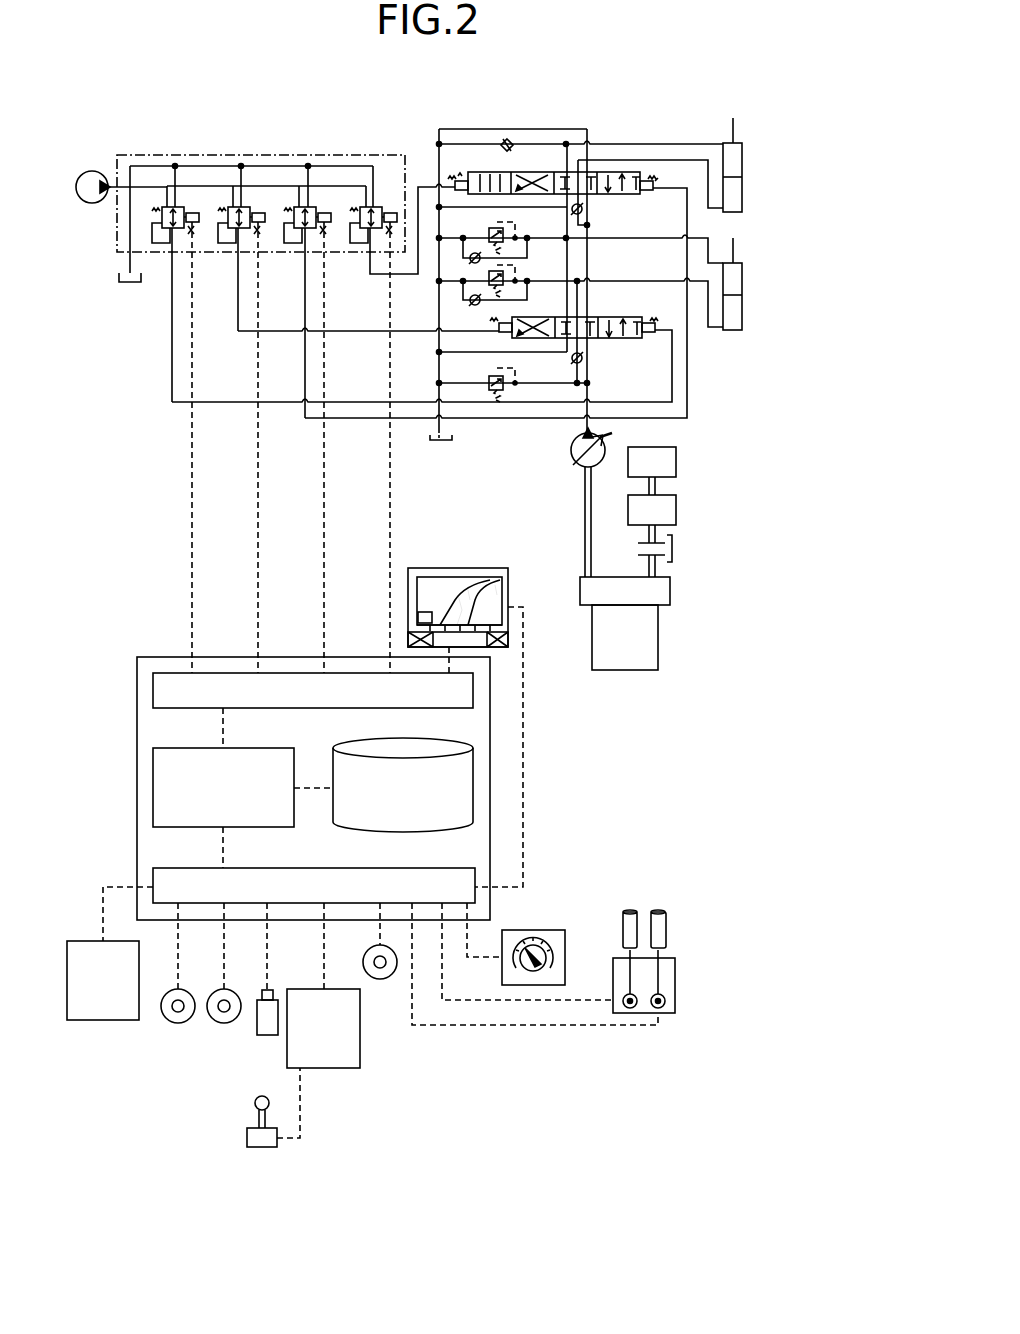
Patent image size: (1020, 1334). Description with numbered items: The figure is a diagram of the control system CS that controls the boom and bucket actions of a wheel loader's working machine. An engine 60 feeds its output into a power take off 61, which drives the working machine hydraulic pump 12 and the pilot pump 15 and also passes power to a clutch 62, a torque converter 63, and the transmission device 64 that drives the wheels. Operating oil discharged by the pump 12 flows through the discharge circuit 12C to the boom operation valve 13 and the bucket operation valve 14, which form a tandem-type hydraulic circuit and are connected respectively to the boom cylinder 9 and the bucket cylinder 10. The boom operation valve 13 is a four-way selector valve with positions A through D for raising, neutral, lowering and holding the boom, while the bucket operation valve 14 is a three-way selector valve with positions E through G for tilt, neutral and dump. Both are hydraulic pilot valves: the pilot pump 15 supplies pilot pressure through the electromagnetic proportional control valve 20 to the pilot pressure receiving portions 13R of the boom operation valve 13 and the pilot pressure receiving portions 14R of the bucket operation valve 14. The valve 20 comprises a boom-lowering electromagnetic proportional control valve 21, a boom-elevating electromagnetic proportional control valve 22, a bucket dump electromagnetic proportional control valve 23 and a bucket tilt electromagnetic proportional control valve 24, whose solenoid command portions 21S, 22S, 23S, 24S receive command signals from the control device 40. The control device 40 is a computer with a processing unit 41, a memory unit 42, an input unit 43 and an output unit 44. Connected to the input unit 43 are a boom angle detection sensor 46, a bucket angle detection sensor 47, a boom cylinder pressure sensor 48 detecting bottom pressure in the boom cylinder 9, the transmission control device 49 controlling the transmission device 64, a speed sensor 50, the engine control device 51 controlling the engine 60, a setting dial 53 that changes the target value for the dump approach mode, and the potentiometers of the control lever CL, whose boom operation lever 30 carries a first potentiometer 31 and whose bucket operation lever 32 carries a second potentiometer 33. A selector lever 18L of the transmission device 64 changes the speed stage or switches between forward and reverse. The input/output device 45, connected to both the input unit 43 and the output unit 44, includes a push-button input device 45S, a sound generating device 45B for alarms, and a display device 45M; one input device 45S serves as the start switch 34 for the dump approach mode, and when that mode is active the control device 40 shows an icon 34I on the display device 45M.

The boom cylinder 9 is at (743, 193).
The bucket cylinder 10 is at (743, 312).
The working machine hydraulic pump 12 is at (574, 455).
The discharge circuit 12C is at (604, 437).
The boom operation valve 13 is at (628, 198).
The pilot pressure receiving portion 13R is at (456, 170).
The bucket operation valve 14 is at (628, 341).
The pilot pressure receiving portion 14R is at (490, 324).
The pilot pump 15 is at (92, 203).
The selector lever 18L is at (256, 1108).
The electromagnetic proportional control valve 20 is at (304, 150).
The boom-lowering electromagnetic proportional control valve 21 is at (380, 200).
The solenoid command portion 21S is at (394, 208).
The boom-elevating electromagnetic proportional control valve 22 is at (312, 200).
The solenoid command portion 22S is at (328, 208).
The bucket dump electromagnetic proportional control valve 23 is at (246, 200).
The solenoid command portion 23S is at (262, 208).
The bucket tilt electromagnetic proportional control valve 24 is at (180, 200).
The solenoid command portion 24S is at (196, 208).
The boom operation lever 30 is at (630, 940).
The first potentiometer 31 is at (626, 1014).
The bucket operation lever 32 is at (667, 925).
The second potentiometer 33 is at (662, 1014).
The start switch 34 is at (440, 610).
The icon 34I is at (424, 612).
The control device 40 is at (137, 747).
The processing unit 41 is at (153, 798).
The memory unit 42 is at (437, 740).
The input unit 43 is at (445, 868).
The output unit 44 is at (153, 694).
The input/output device 45 is at (436, 560).
The sound generating device 45B is at (508, 638).
The display device 45M is at (465, 580).
The input device 45S is at (498, 580).
The boom angle detection sensor 46 is at (178, 1023).
The bucket angle detection sensor 47 is at (224, 1023).
The boom cylinder pressure sensor 48 is at (268, 1035).
The TM control device 49 is at (336, 1069).
The speed sensor 50 is at (380, 979).
The engine control device 51 is at (100, 1021).
The setting dial 53 is at (550, 930).
The engine 60 is at (659, 633).
The PTO 61 is at (671, 589).
The clutch 62 is at (680, 550).
The torque converter 63 is at (677, 511).
The transmission device 64 is at (677, 462).
The control system CS is at (120, 395).
The control lever CL is at (710, 908).